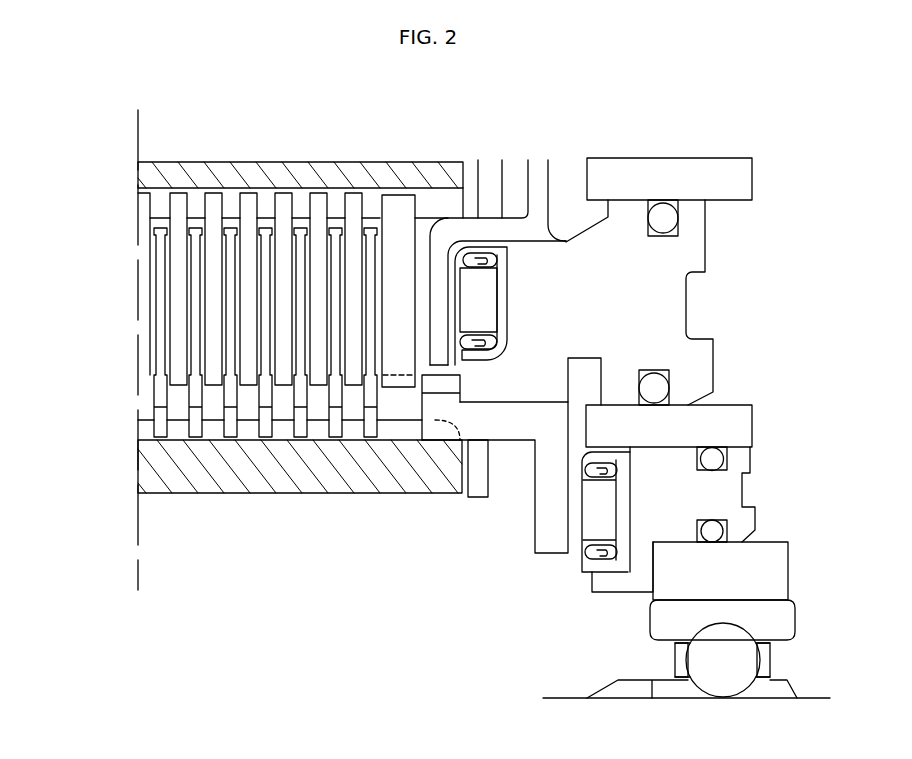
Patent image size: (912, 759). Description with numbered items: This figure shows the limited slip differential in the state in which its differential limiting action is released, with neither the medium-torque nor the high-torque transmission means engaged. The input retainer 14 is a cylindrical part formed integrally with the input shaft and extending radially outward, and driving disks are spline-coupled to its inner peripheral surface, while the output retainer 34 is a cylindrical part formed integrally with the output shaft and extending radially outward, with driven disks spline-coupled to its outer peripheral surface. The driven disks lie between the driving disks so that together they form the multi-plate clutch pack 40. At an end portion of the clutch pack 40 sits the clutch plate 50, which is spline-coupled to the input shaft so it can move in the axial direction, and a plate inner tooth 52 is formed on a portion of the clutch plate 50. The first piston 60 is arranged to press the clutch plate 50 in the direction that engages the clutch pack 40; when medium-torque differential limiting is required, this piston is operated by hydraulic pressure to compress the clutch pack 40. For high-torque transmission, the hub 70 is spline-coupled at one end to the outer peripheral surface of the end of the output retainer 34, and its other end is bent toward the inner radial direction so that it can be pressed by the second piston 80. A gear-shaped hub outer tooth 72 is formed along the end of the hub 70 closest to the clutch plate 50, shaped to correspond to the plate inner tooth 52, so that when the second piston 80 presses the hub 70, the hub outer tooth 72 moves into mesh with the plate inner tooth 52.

The input retainer 14 is at (258, 178).
The output retainer 34 is at (235, 487).
The clutch pack 40 is at (130, 352).
The clutch plate 50 is at (398, 205).
The plate inner tooth 52 is at (393, 378).
The first piston 60 is at (668, 304).
The hub 70 is at (548, 545).
The hub outer tooth 72 is at (456, 442).
The second piston 80 is at (730, 494).